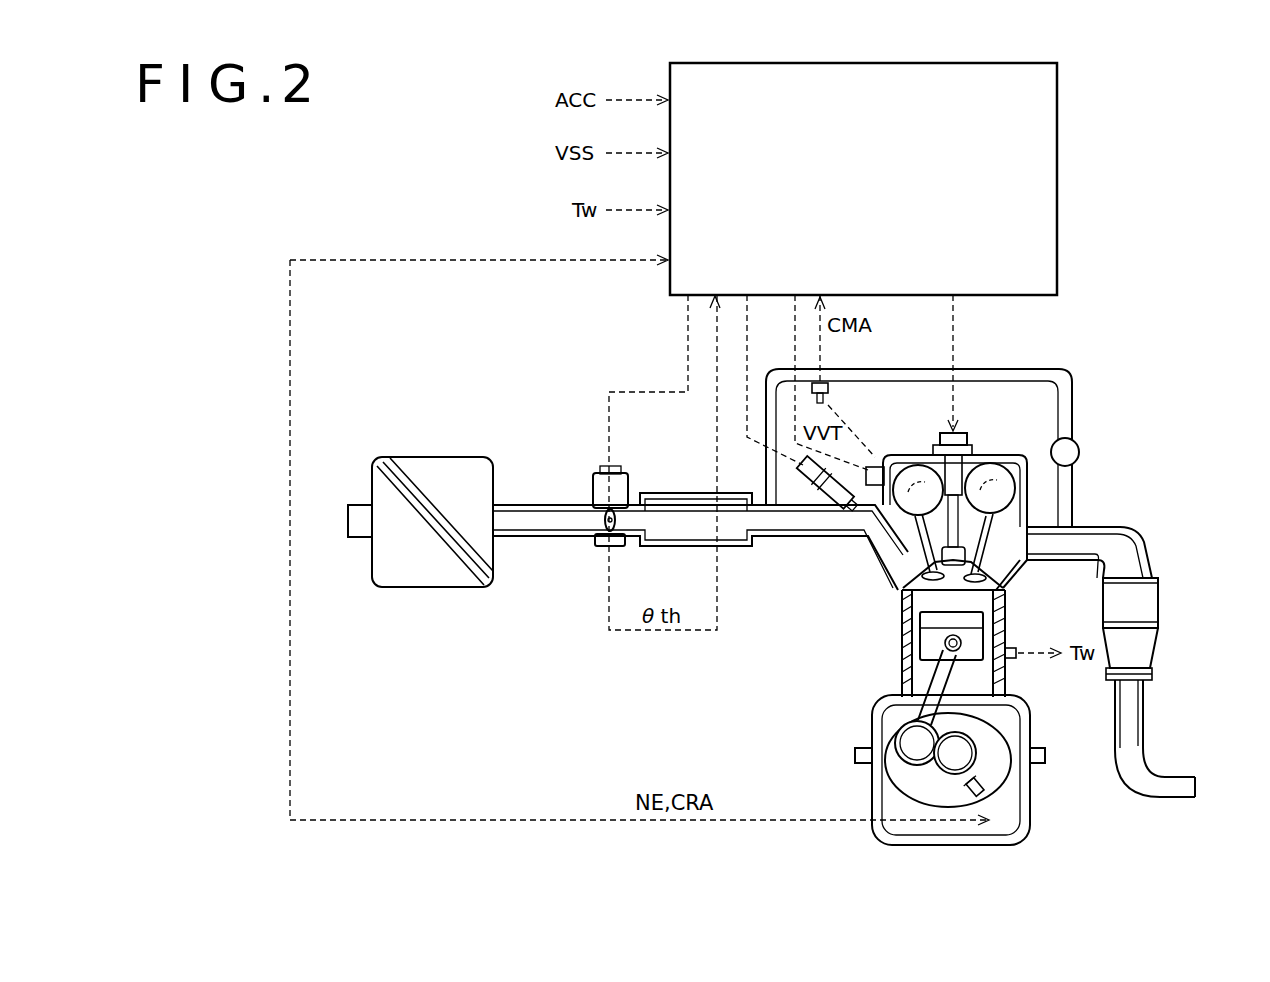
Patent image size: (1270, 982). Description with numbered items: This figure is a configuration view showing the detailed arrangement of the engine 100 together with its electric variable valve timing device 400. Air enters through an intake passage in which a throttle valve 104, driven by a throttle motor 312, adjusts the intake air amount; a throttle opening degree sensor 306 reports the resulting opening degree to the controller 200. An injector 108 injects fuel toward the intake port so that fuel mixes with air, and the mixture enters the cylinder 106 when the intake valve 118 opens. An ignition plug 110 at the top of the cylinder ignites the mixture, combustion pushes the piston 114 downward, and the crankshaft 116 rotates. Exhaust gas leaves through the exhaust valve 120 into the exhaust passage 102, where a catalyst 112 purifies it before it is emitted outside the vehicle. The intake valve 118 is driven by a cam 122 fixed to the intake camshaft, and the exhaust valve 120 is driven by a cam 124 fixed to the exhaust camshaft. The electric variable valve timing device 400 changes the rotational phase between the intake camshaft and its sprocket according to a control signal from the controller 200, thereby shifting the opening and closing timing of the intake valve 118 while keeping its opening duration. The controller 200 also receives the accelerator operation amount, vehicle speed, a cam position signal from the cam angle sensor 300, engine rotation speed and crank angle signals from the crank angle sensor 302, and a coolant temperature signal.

The engine 100 is at (1158, 412).
The exhaust passage 102 is at (1088, 524).
The throttle valve 104 is at (620, 508).
The cylinder 106 is at (925, 613).
The injector 108 is at (822, 473).
The ignition plug 110 is at (972, 450).
The catalyst 112 is at (1160, 596).
The piston 114 is at (910, 675).
The crankshaft 116 is at (993, 790).
The intake valve 118 is at (927, 567).
The exhaust valve 120 is at (1012, 570).
The cam 122 is at (900, 462).
The cam 124 is at (1017, 455).
The controller 200 is at (1058, 78).
The cam angle sensor 300 is at (832, 382).
The crank angle sensor 302 is at (997, 782).
The throttle opening degree sensor 306 is at (597, 546).
The throttle motor 312 is at (596, 478).
The electric variable valve timing (VVT) device 400 is at (915, 455).